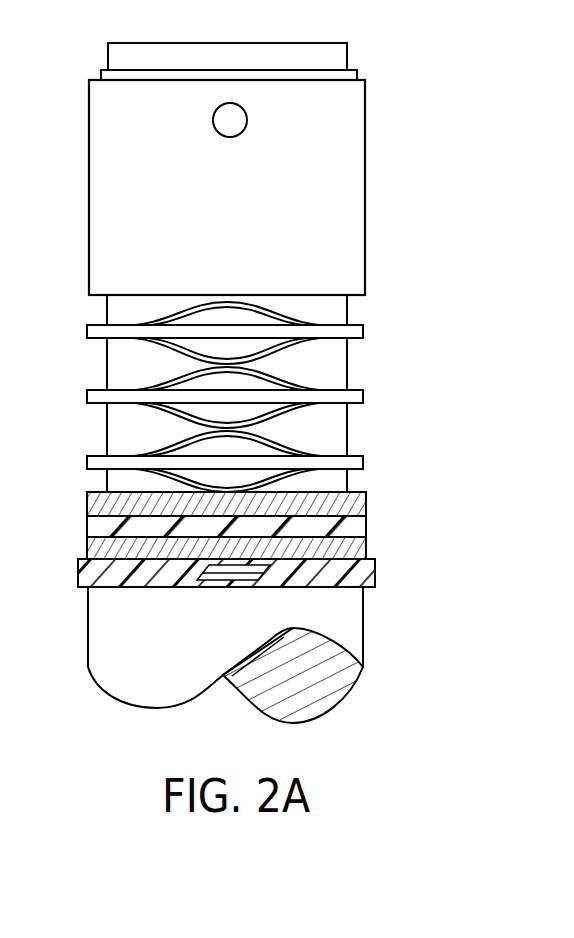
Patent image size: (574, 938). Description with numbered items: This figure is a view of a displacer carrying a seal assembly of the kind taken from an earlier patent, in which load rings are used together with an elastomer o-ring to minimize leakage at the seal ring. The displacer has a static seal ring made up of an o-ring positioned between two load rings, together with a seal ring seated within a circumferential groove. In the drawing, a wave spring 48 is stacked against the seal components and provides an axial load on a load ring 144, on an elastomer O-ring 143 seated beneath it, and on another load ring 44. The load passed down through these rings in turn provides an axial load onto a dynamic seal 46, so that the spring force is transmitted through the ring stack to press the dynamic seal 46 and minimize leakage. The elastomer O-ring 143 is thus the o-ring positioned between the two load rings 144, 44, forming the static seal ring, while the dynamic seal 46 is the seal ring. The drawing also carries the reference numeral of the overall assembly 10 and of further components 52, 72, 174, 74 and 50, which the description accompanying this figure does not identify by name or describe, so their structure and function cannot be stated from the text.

The implantable stimulator device 10 is at (438, 41).
The housing 52 is at (365, 150).
The shaft 72 is at (355, 297).
The wave spring 48 is at (87, 397).
The load ring 144 is at (366, 503).
The elastomer O-ring 143 is at (87, 526).
The load ring 44 is at (368, 542).
The dynamic seal 46 is at (78, 577).
The contact element 174 is at (372, 561).
The lower shaft 74 is at (362, 590).
The tip electrode 50 is at (363, 655).